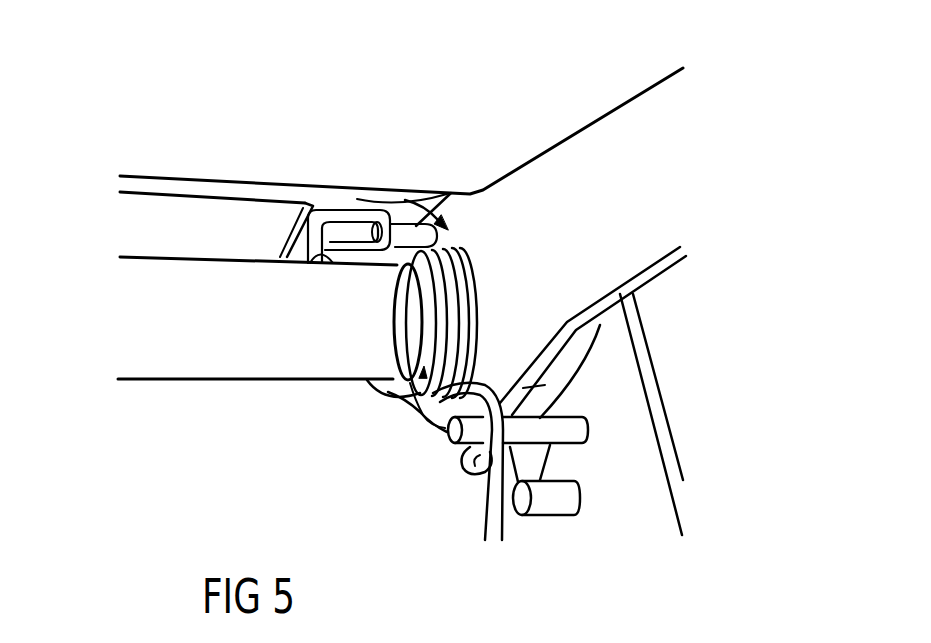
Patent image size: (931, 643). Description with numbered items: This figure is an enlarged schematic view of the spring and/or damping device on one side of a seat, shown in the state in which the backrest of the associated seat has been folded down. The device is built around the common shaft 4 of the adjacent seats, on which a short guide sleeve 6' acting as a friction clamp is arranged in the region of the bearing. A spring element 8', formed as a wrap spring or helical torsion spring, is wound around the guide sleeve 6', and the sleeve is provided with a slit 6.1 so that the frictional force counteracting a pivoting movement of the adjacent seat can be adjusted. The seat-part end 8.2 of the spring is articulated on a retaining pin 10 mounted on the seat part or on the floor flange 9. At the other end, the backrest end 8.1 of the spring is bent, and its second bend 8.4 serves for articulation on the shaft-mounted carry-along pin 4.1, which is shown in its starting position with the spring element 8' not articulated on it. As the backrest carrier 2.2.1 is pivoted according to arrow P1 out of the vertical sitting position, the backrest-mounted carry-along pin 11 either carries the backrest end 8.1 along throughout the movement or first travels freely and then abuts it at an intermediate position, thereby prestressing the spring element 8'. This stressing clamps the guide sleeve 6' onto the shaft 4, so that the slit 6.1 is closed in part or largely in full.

The backrest carrier 2.2.1 is at (673, 121).
The common shaft 4 is at (137, 325).
The shaft-mounted carry-along pin 4.1 is at (314, 238).
The backrest end of the spring 8.1 is at (347, 213).
The second bend 8.4 is at (365, 217).
The arrow P1 is at (403, 196).
The backrest-mounted carry-along pin 11 is at (437, 190).
The slit 6.1 is at (412, 343).
The guide sleeve 6' is at (404, 347).
The spring element 8' is at (417, 431).
The seat-part end of the spring 8.2 is at (477, 467).
The retaining pin 10 is at (578, 430).
The floor flange 9 is at (648, 484).